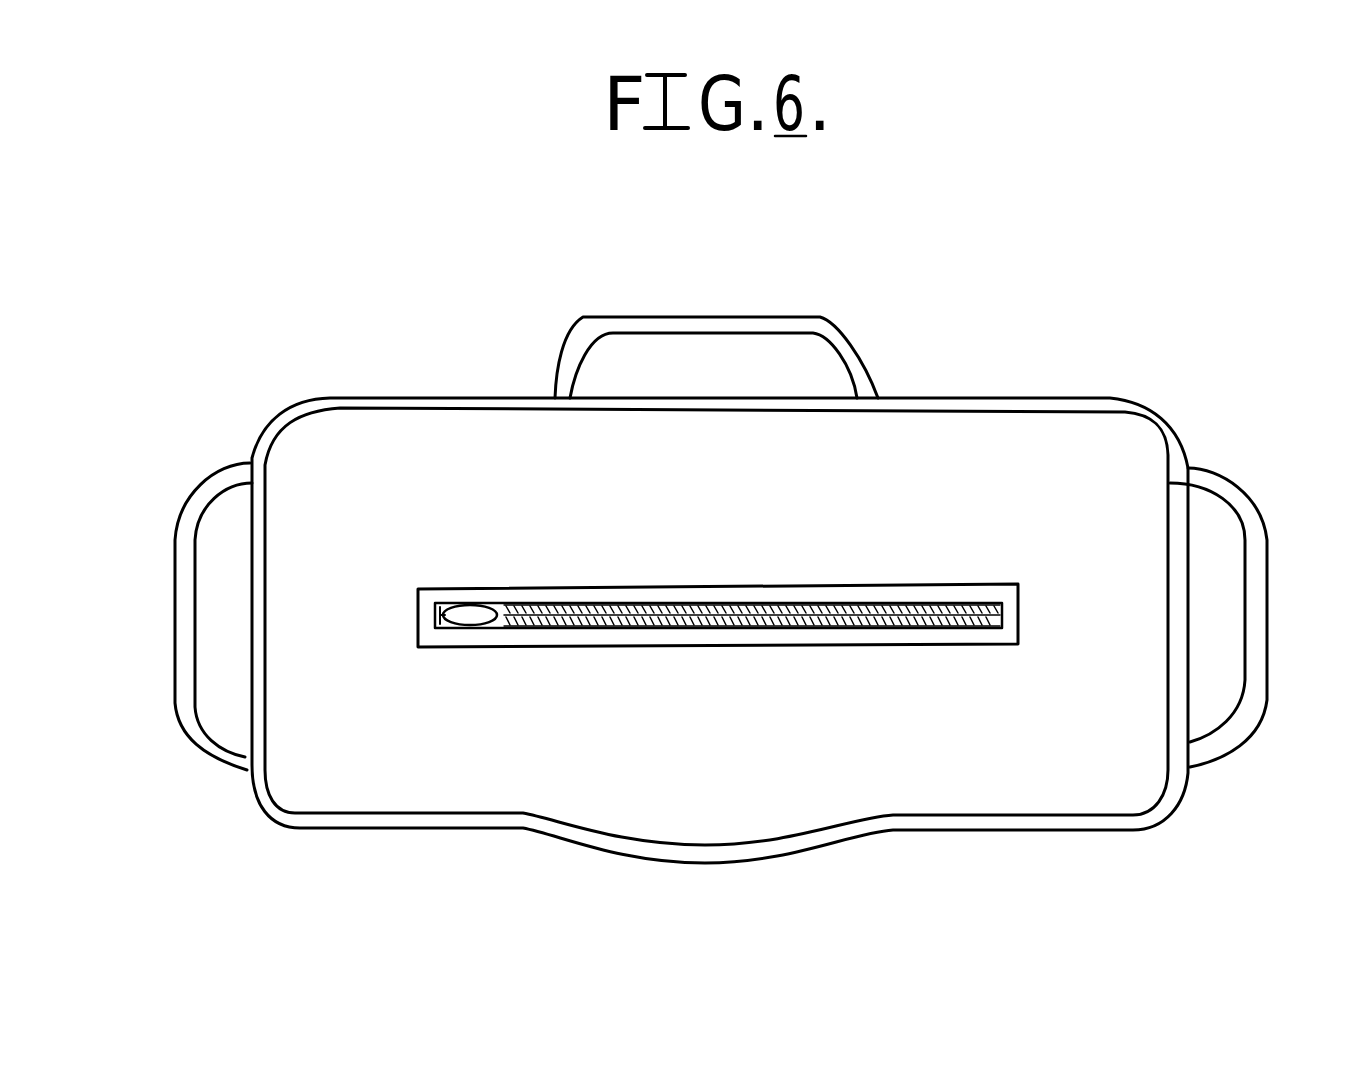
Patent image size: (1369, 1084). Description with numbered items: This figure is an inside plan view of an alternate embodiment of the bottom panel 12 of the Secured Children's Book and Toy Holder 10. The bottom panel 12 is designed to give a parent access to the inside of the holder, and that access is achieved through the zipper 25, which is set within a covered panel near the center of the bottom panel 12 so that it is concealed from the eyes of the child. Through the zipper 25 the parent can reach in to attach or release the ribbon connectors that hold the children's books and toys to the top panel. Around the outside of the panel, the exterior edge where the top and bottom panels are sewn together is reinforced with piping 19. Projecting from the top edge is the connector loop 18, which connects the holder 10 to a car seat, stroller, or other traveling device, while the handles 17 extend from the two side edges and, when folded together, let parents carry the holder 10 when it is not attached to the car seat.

The Secured Children's Book and Toy Holder 10 is at (691, 604).
The bottom panel 12 is at (763, 731).
The handles 17 is at (177, 703).
The connector loop 18 is at (835, 330).
The piping 19 is at (1108, 403).
The zipper 25 is at (740, 632).